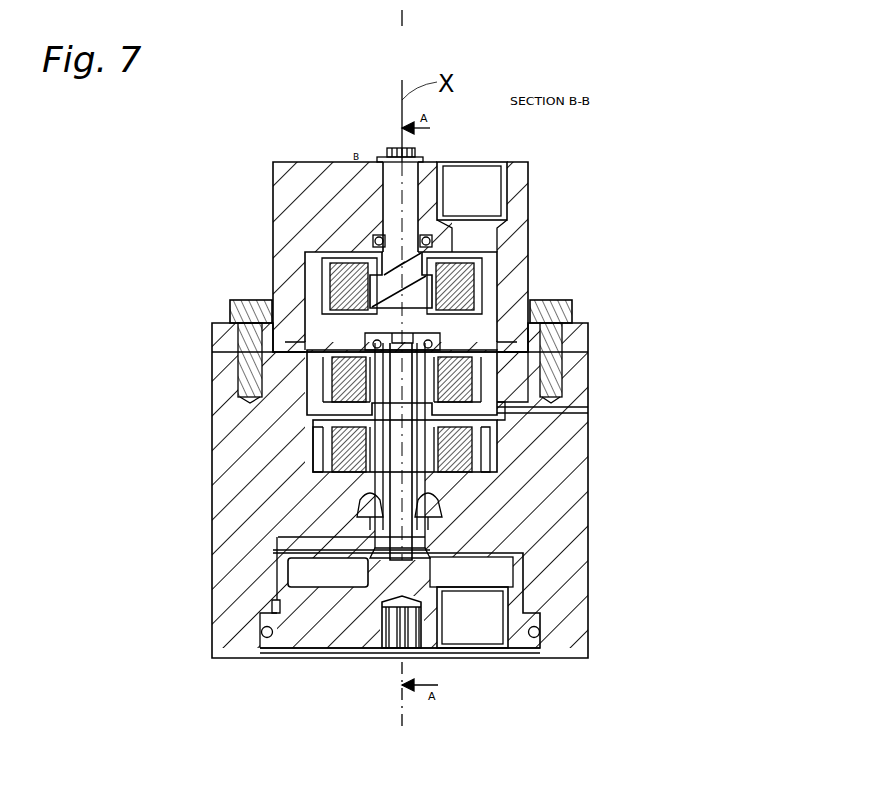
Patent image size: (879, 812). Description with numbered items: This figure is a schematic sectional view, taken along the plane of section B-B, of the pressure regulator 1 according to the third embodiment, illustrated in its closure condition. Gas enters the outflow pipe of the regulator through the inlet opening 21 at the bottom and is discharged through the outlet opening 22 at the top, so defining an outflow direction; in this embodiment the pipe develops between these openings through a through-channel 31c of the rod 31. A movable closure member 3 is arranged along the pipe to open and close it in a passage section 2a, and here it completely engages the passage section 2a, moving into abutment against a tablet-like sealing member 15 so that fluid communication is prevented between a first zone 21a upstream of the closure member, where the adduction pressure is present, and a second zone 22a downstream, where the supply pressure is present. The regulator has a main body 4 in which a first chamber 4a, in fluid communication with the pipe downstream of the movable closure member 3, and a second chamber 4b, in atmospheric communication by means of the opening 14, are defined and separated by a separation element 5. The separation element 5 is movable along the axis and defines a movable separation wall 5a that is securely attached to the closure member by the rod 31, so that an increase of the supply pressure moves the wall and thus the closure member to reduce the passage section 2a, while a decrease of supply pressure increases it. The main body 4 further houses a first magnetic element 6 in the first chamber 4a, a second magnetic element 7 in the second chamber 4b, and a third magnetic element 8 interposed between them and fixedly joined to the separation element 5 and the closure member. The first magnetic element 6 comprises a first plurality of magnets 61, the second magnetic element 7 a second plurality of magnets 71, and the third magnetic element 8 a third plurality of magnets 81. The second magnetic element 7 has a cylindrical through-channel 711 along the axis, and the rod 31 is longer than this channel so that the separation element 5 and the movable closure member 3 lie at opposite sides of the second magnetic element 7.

The pressure regulator 1 is at (695, 257).
The passage section 2a is at (428, 548).
The movable closure member 3 is at (428, 537).
The main body 4 is at (212, 347).
The first chamber 4a is at (467, 325).
The second chamber 4b is at (490, 392).
The separation element 5 is at (312, 338).
The movable separation wall 5a is at (340, 392).
The first magnetic element 6 is at (323, 267).
The second magnetic element 7 is at (340, 480).
The third magnetic element 8 is at (313, 452).
The opening 14 is at (520, 407).
The tablet-like sealing member 15 is at (412, 567).
The inlet opening 21 is at (488, 663).
The first zone 21a is at (482, 610).
The outlet opening 22 is at (490, 162).
The second zone 22a is at (462, 232).
The rod 31 is at (335, 462).
The through-channel of the rod 31c is at (500, 466).
The first plurality of magnets 61 is at (342, 263).
The second plurality of magnets 71 is at (490, 432).
The through-channel 711 is at (275, 600).
The third plurality of magnets 81 is at (553, 332).